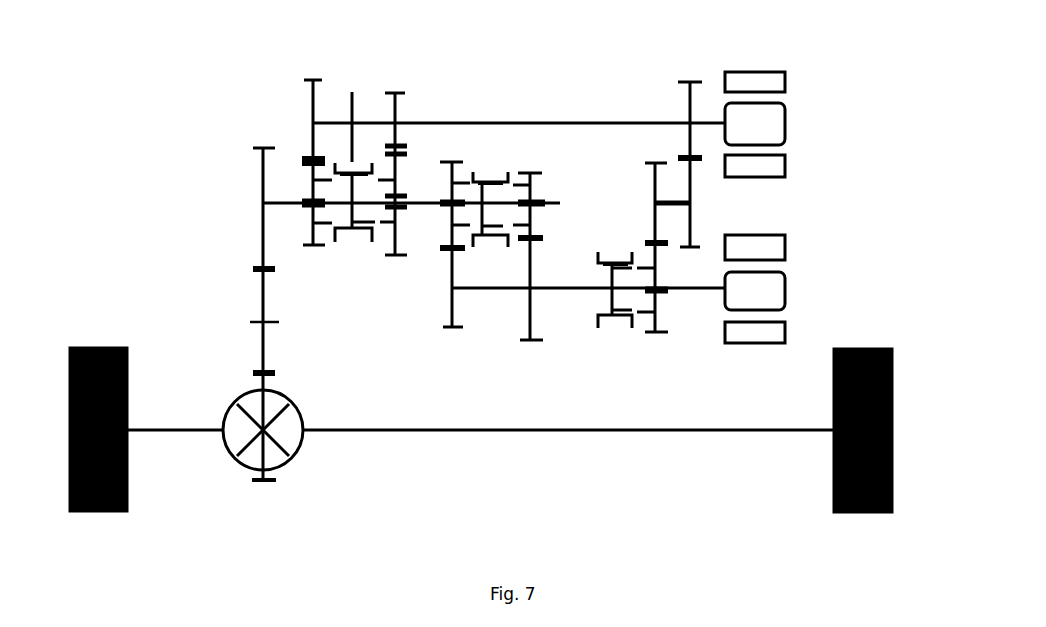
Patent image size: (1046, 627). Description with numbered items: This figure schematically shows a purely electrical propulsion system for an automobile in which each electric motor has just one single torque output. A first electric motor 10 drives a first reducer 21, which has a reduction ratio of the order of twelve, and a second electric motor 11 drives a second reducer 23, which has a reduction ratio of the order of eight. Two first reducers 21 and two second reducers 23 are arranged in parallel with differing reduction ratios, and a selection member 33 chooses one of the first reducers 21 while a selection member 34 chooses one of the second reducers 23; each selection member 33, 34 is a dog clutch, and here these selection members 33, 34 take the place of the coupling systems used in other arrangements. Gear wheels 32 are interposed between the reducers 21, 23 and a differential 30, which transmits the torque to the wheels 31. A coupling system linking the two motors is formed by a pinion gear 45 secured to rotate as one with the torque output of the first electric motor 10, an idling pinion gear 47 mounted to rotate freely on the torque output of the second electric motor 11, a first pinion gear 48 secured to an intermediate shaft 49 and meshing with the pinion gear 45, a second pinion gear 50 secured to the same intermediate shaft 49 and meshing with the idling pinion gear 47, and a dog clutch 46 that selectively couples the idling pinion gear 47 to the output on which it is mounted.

The first electric motor 10 is at (760, 83).
The second electric motor 11 is at (777, 250).
The first reducer 21 is at (398, 90).
The second reducer 23 is at (527, 353).
The differential 30 is at (285, 415).
The wheels 31 is at (83, 347).
The gear wheel 32 is at (258, 292).
The selection member 33 is at (355, 156).
The selection member 34 is at (488, 170).
The pinion gear 45 is at (688, 112).
The dog clutch 46 is at (618, 318).
The idling pinion gear 47 is at (655, 302).
The first pinion gear 48 is at (690, 188).
The intermediate shaft 49 is at (680, 203).
The second pinion gear 50 is at (655, 212).